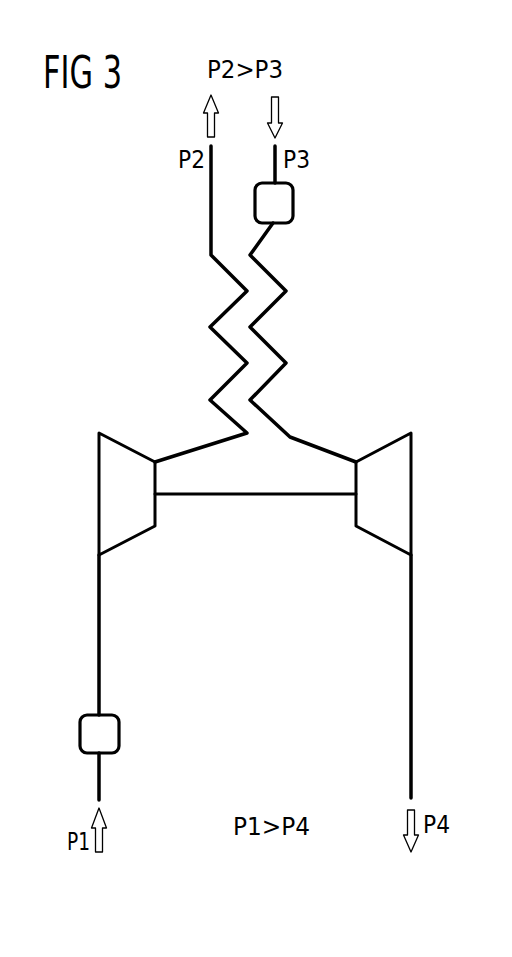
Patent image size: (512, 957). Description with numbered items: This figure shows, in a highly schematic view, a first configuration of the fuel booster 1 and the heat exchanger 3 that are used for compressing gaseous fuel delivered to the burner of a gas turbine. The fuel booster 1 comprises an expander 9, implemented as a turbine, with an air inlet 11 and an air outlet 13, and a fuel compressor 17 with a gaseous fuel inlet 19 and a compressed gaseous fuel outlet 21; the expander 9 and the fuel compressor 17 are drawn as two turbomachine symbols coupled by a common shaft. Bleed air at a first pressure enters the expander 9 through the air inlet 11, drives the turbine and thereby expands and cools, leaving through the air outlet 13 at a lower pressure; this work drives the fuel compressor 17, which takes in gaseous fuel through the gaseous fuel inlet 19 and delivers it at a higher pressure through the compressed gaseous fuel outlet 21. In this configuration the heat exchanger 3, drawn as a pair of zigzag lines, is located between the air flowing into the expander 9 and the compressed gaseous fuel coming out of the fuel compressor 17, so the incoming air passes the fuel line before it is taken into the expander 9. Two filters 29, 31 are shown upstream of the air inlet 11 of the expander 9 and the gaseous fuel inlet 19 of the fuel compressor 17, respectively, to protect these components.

The fuel booster 1 is at (257, 518).
The heat exchanger 3 is at (213, 304).
The expander 9 is at (402, 492).
The air inlet 11 is at (297, 442).
The air outlet 13 is at (412, 602).
The fuel compressor 17 is at (108, 498).
The gaseous fuel inlet 19 is at (100, 602).
The compressed gaseous fuel outlet 21 is at (200, 450).
The filter 29 is at (293, 203).
The filter 31 is at (119, 733).